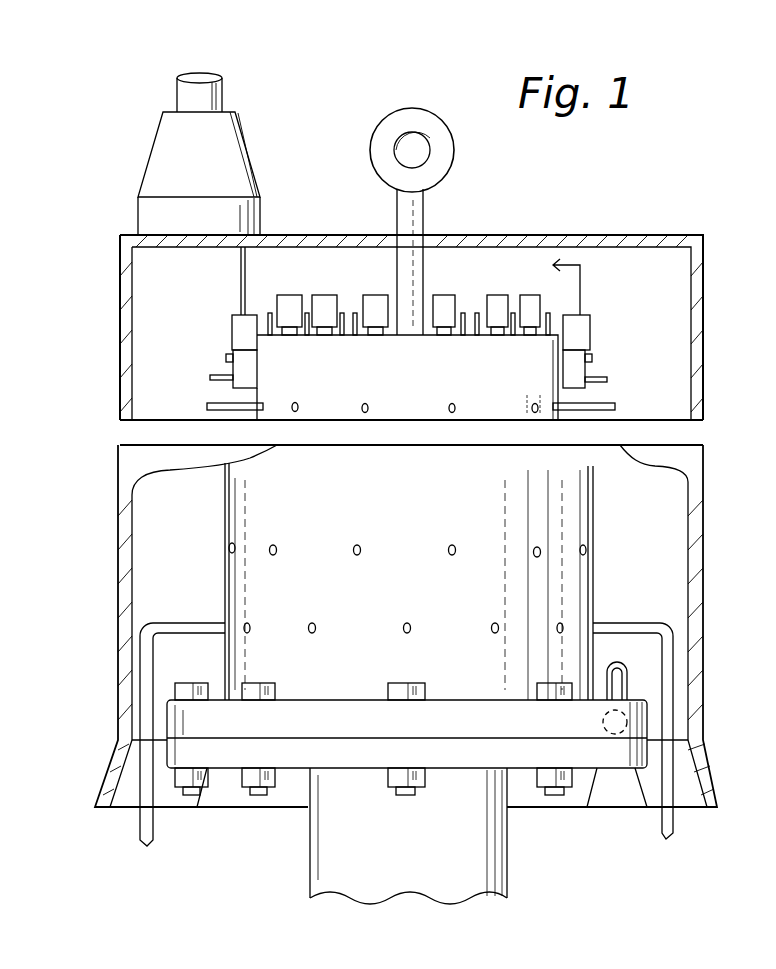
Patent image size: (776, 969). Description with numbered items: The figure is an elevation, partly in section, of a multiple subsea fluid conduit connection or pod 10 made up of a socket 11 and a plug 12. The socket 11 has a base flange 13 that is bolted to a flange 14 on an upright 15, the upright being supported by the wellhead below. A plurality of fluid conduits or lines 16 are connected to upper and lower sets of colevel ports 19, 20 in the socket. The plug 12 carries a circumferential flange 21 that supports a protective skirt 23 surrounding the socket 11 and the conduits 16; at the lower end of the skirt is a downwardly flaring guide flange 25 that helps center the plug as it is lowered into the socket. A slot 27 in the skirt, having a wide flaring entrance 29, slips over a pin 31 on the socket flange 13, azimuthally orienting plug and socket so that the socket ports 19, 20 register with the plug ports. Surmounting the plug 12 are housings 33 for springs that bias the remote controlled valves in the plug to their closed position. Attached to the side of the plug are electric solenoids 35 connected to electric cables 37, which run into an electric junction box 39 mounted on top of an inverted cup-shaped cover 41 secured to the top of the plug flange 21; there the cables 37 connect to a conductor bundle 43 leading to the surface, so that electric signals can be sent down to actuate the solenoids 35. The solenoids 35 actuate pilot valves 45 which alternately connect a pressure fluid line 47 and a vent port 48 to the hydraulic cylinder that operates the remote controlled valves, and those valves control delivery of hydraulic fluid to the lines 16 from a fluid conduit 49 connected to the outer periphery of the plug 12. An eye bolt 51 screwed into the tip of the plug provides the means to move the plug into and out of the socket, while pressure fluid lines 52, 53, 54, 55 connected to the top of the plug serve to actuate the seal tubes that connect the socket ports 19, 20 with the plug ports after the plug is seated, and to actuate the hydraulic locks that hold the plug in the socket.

The multiple subsea fluid conduit connection or pod 10 is at (713, 523).
The socket 11 is at (418, 488).
The plug 12 is at (418, 399).
The base flange 13 is at (455, 712).
The flange 14 is at (462, 755).
The upright 15 is at (418, 877).
The fluid conduits or lines 16 is at (190, 623).
The upper ports 19 is at (355, 547).
The lower ports 20 is at (405, 626).
The circumferential flange 21 is at (700, 435).
The protective skirt 23 is at (690, 560).
The guide flange 25 is at (700, 778).
The slot 27 is at (627, 683).
The flaring entrance 29 is at (635, 792).
The pin 31 is at (602, 722).
The housings 33 is at (372, 296).
The electric solenoids 35 is at (232, 320).
The electric cables 37 is at (243, 268).
The electric junction box 39 is at (152, 210).
The inverted cup-shaped cover 41 is at (120, 255).
The conductor bundle 43 is at (178, 92).
The pilot valves 45 is at (240, 368).
The pressure fluid line 47 is at (204, 382).
The vent port 48 is at (228, 357).
The fluid conduit 49 is at (201, 409).
The eye bolt 51 is at (395, 118).
The pressure fluid line 52 is at (270, 337).
The pressure fluid line 53 is at (307, 337).
The pressure fluid line 54 is at (343, 337).
The pressure fluid line 55 is at (355, 337).